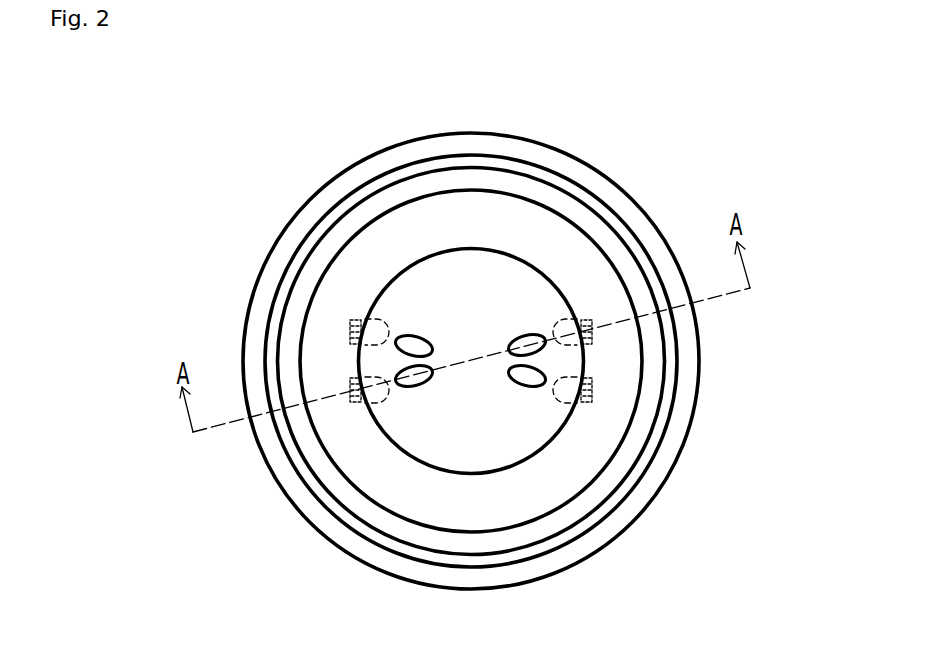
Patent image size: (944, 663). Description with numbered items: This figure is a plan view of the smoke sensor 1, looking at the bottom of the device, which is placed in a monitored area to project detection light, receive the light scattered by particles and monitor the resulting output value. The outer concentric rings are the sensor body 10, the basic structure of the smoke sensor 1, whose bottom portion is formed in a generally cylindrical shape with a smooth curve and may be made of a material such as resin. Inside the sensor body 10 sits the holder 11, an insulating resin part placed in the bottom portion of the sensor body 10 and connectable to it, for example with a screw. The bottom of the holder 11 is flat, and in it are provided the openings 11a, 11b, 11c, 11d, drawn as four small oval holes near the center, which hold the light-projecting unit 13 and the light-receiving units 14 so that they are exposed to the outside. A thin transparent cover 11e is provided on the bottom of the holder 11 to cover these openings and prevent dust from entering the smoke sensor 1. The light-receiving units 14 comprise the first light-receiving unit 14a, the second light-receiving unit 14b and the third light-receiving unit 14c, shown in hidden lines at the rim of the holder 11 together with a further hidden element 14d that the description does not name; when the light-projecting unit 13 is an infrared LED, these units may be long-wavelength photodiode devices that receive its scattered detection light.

The smoke sensor 1 is at (187, 144).
The sensor body 10 is at (262, 265).
The holder 11 is at (473, 232).
The opening 11a is at (412, 384).
The opening 11b is at (544, 337).
The opening 11c is at (544, 384).
The opening 11d is at (412, 338).
The transparent cover 11e is at (479, 427).
The light-projecting unit 13 is at (375, 420).
The light-receiving units 14 is at (598, 398).
The first light-receiving unit 14a is at (573, 318).
The second light-receiving unit 14b is at (580, 406).
The third light-receiving unit 14c is at (371, 318).
The engaging portion 14d is at (369, 390).